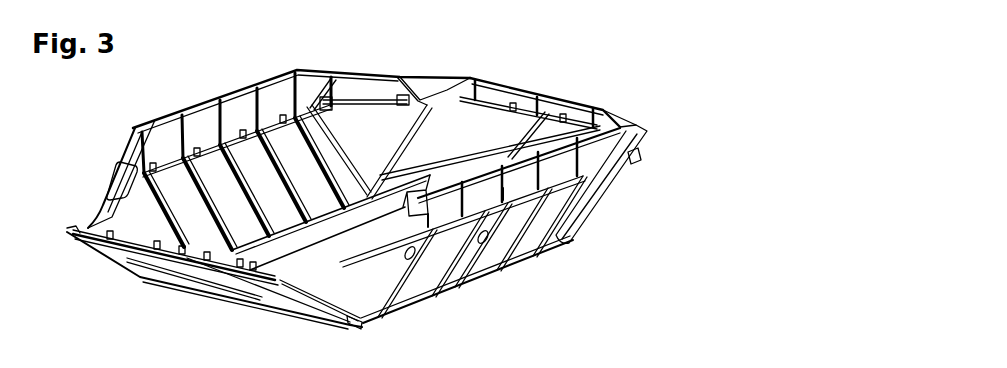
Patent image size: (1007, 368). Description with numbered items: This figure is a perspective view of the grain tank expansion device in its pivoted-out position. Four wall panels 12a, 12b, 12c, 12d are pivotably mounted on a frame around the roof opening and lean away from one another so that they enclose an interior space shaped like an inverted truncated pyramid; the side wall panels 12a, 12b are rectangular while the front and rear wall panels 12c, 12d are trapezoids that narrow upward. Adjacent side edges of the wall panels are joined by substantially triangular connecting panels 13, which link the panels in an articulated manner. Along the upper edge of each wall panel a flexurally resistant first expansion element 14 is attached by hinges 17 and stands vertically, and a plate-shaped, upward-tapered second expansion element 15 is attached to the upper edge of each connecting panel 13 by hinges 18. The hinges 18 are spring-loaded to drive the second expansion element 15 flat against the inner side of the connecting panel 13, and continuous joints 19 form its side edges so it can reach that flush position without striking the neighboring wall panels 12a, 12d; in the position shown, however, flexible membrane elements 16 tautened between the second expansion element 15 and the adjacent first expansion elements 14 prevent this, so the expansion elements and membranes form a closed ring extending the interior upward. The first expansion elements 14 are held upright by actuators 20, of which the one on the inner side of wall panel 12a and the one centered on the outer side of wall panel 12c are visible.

The side wall panel 12a is at (493, 115).
The side wall panel 12b is at (177, 273).
The front wall panel 12c is at (533, 223).
The rear wall panel 12d is at (253, 153).
The connecting element 13 is at (132, 210).
The first expansion element 14 is at (200, 120).
The second expansion element 15 is at (385, 85).
The membrane element 16 is at (307, 82).
The hinge 17 is at (197, 148).
The hinge 18 is at (367, 98).
The continuous joint 19 is at (387, 170).
The actuator 20 is at (647, 125).